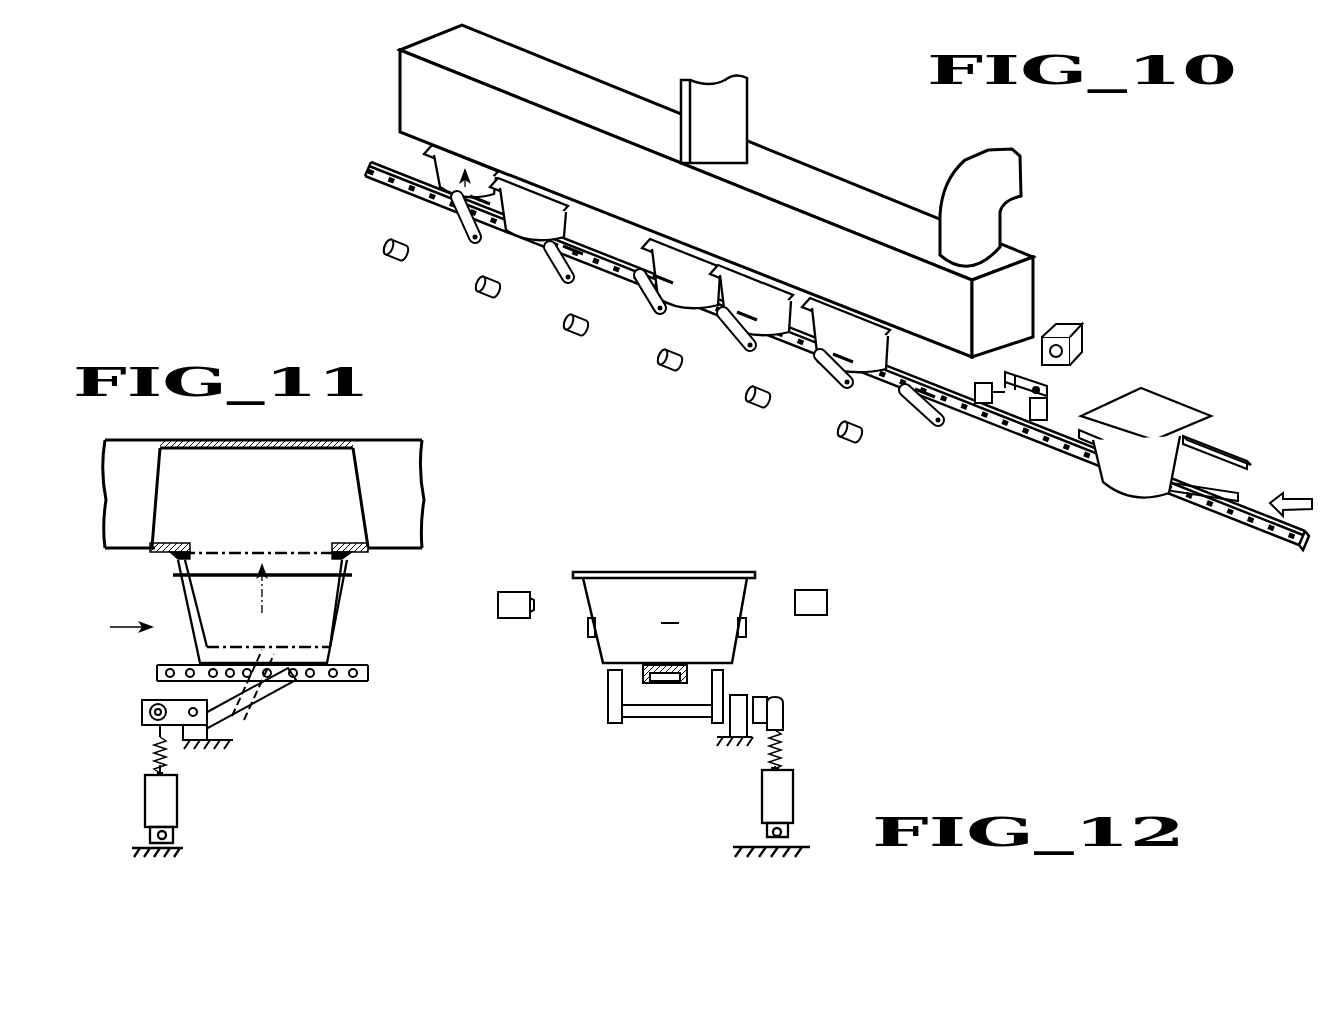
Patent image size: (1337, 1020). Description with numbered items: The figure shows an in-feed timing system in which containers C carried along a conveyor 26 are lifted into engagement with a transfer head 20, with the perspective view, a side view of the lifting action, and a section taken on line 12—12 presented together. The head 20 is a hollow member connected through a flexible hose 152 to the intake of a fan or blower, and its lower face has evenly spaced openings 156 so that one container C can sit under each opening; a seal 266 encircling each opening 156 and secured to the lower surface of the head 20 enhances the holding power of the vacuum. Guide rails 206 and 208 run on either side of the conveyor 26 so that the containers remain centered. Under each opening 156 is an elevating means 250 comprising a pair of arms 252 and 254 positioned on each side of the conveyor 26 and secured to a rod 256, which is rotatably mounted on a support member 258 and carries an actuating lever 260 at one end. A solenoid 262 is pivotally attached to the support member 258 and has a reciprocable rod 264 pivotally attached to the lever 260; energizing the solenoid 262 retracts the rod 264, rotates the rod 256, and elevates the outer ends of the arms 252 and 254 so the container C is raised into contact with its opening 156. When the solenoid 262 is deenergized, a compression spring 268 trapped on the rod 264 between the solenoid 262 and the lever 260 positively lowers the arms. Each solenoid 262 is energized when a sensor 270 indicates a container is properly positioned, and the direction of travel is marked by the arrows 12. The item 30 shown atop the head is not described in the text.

In FIG. 10, the direction of conveyor travel 12 is at (963, 363).
In FIG. 10, the head 20 is at (408, 98).
In FIG. 11, the head 20 is at (410, 497).
In FIG. 10, the conveyor 26 is at (1263, 533).
In FIG. 11, the conveyor 26 is at (170, 663).
In FIG. 12, the conveyor 26 is at (608, 677).
In FIG. 10, the inlet duct 30 is at (740, 103).
In FIG. 10, the flexible hose 152 is at (1015, 178).
In FIG. 11, the openings 156 is at (187, 553).
In FIG. 10, the guide rail 206 is at (1170, 495).
In FIG. 12, the guide rail 206 is at (588, 630).
In FIG. 10, the guide rail 208 is at (1195, 446).
In FIG. 12, the guide rail 208 is at (747, 630).
In FIG. 10, the elevating means 250 is at (553, 273).
In FIG. 11, the elevating means 250 is at (198, 765).
In FIG. 10, the arm 252 is at (938, 420).
In FIG. 12, the arm 252 is at (613, 692).
In FIG. 11, the arm 254 is at (273, 697).
In FIG. 12, the arm 254 is at (723, 675).
In FIG. 12, the rod 256 is at (643, 713).
In FIG. 11, the support member 258 is at (210, 730).
In FIG. 12, the support member 258 is at (733, 747).
In FIG. 10, the actuating lever 260 is at (1037, 383).
In FIG. 11, the actuating lever 260 is at (187, 702).
In FIG. 12, the actuating lever 260 is at (767, 697).
In FIG. 10, the solenoid 262 is at (1051, 423).
In FIG. 11, the solenoid 262 is at (148, 808).
In FIG. 12, the solenoid 262 is at (793, 803).
In FIG. 11, the reciprocable rod 264 is at (153, 747).
In FIG. 12, the reciprocable rod 264 is at (783, 737).
In FIG. 11, the seal 266 is at (350, 550).
In FIG. 11, the compression spring 268 is at (157, 763).
In FIG. 12, the compression spring 268 is at (783, 763).
In FIG. 10, the sensor 270 is at (477, 280).
In FIG. 10, the container C is at (800, 340).
In FIG. 11, the container C is at (197, 595).
In FIG. 12, the container C is at (664, 617).